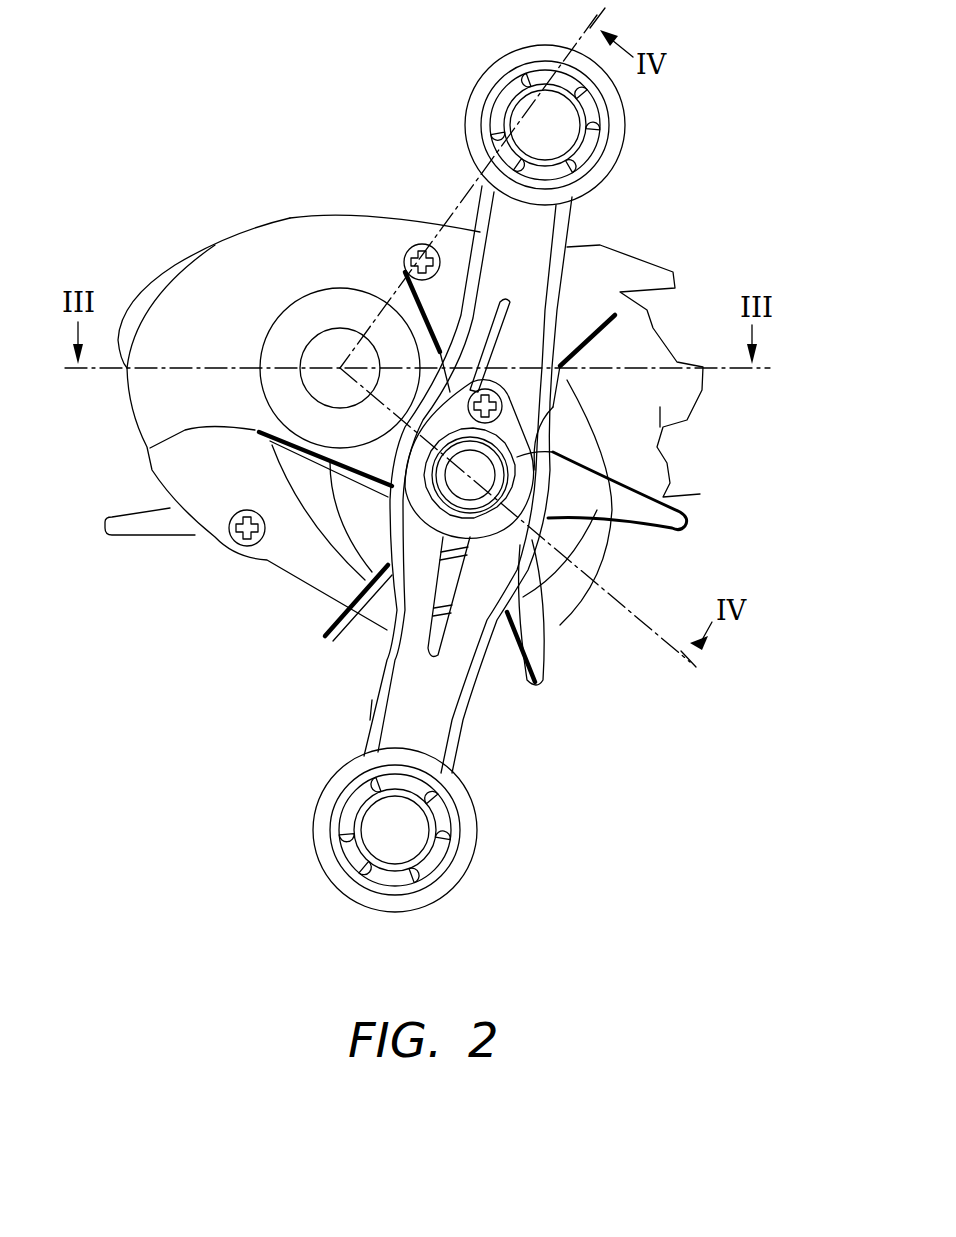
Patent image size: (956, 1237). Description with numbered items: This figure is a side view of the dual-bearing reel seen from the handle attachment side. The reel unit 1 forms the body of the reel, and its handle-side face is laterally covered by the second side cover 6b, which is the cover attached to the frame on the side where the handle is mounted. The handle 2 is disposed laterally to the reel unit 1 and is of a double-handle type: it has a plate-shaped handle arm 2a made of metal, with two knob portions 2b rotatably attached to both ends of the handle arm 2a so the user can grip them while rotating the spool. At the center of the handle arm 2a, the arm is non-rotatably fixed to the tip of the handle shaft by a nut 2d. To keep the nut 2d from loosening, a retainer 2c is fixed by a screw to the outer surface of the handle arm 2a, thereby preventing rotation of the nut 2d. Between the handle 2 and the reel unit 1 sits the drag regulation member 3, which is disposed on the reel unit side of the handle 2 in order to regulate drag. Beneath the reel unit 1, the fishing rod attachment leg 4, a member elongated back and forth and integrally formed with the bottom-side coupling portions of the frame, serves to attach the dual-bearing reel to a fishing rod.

The reel unit 1 is at (235, 228).
The handle 2 is at (588, 217).
The handle arm 2a is at (438, 717).
The knob portions 2b is at (617, 137).
The retainer 2c is at (487, 653).
The nut 2d is at (500, 522).
The drag regulation member 3 is at (147, 447).
The fishing rod attachment leg 4 is at (150, 540).
The second side cover 6b is at (215, 298).